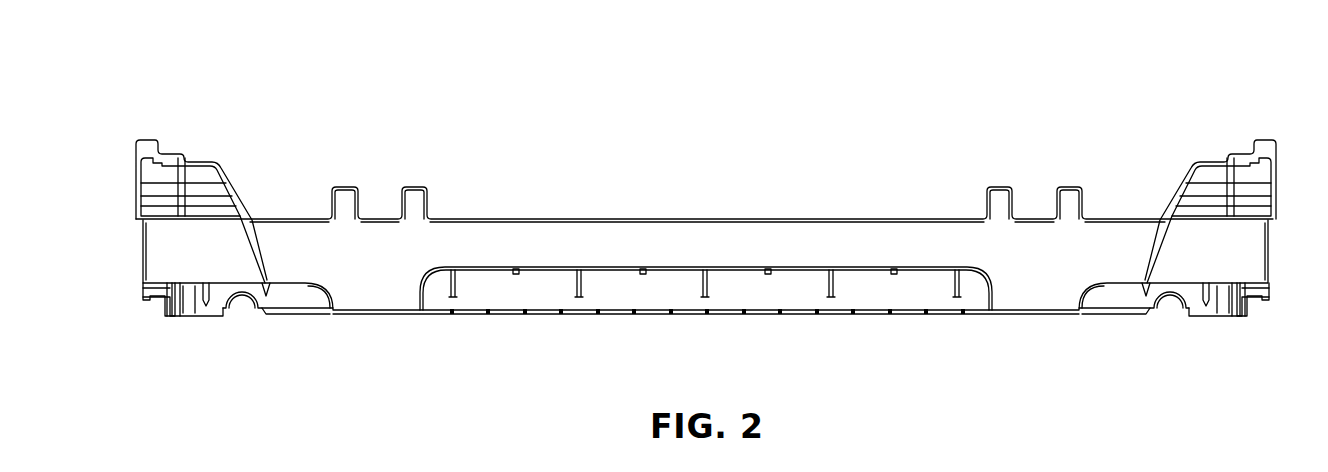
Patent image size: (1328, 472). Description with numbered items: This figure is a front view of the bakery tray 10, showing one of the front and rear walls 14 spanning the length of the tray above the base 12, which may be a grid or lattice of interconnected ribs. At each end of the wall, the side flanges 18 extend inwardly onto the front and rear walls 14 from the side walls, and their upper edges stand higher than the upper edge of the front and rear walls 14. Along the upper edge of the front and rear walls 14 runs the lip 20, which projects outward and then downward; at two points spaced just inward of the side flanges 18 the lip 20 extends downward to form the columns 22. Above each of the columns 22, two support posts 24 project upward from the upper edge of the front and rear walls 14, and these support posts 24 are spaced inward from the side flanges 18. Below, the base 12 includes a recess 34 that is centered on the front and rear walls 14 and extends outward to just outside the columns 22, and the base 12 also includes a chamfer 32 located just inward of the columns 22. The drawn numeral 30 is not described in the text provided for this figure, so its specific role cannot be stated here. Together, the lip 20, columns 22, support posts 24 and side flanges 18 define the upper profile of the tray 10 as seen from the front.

The bakery tray 10 is at (1158, 96).
The base 12 is at (272, 318).
The front and rear walls 14 is at (818, 217).
The side flanges 18 is at (229, 186).
The lip 20 is at (550, 270).
The columns 22 is at (373, 315).
The support posts 24 is at (398, 199).
The mounting feet 30 is at (170, 318).
The chamfer 32 is at (713, 315).
The recess 34 is at (315, 318).